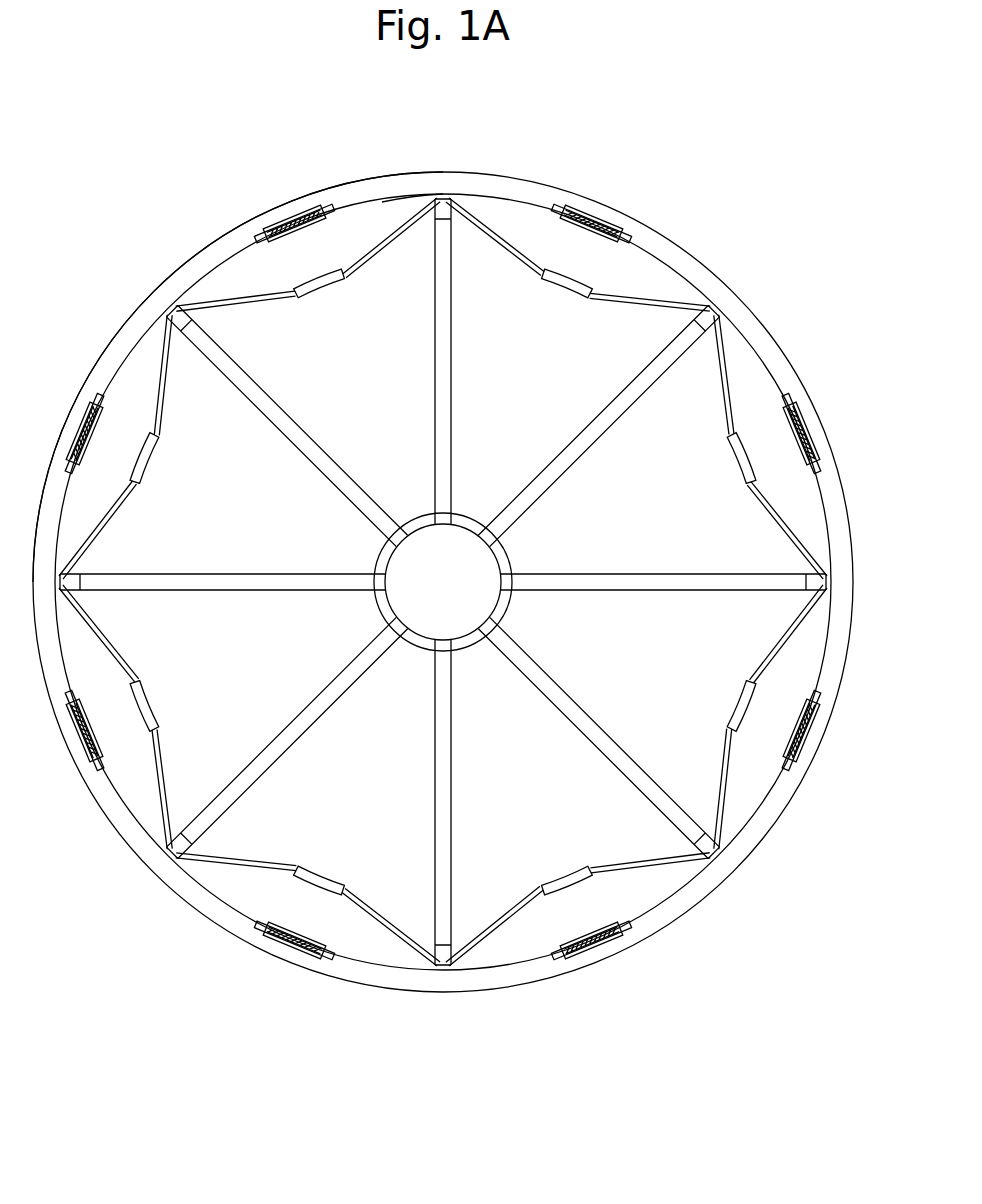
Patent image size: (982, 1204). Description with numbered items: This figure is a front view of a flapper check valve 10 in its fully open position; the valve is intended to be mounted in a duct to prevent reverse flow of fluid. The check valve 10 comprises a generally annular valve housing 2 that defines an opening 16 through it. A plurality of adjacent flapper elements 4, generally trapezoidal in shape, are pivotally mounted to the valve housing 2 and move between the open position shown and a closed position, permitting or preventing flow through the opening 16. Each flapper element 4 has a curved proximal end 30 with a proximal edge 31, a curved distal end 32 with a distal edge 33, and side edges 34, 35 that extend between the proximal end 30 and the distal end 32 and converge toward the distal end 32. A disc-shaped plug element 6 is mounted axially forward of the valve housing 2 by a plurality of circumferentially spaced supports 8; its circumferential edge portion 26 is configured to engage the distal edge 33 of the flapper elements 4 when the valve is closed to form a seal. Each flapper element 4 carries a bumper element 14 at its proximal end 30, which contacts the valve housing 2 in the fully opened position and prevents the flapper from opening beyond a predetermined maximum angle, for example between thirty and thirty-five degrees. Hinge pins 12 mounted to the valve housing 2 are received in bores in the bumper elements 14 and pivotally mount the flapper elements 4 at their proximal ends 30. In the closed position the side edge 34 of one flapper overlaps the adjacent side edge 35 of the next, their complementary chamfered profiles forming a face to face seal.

The valve housing 2 is at (532, 973).
The flapper element 4 is at (357, 923).
The plug element 6 is at (434, 593).
The support 8 is at (677, 805).
The flapper check valve 10 is at (175, 218).
The hinge pin 12 is at (257, 932).
The bumper element 14 is at (287, 948).
The opening 16 is at (387, 832).
The circumferential edge portion 26 is at (383, 552).
The proximal end 30 is at (512, 203).
The proximal edge 31 is at (381, 202).
The distal end 32 is at (570, 273).
The distal edge 33 is at (313, 276).
The side edge 34 is at (725, 363).
The side edge 35 is at (787, 517).